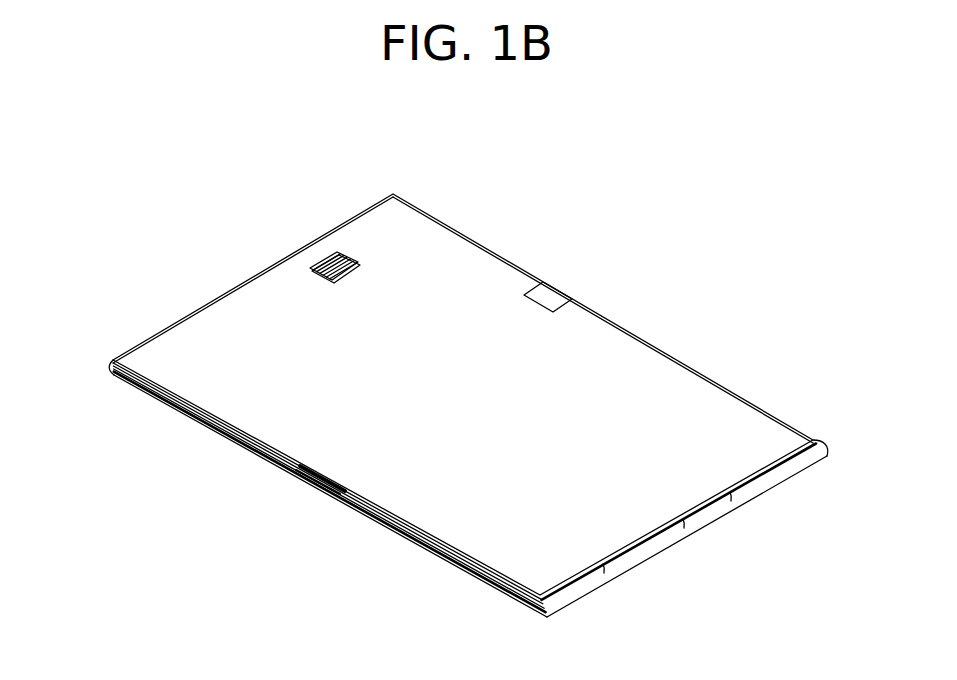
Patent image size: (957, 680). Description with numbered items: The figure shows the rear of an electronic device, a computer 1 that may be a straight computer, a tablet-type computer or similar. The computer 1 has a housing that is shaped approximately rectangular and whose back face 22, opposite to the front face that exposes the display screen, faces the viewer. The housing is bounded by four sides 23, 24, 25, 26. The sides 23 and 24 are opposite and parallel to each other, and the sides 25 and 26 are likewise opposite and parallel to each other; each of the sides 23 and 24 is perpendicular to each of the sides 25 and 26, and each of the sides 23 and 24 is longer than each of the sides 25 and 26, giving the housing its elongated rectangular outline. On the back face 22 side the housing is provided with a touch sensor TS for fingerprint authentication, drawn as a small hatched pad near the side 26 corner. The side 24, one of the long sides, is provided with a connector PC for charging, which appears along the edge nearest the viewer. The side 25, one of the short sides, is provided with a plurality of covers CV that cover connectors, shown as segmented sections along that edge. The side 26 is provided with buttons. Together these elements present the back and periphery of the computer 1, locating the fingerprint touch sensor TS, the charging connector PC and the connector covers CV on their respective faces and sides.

The computer 1 is at (548, 163).
The back face 22 is at (637, 378).
The side 23 is at (607, 318).
The side 24 is at (453, 567).
The side 25 is at (777, 485).
The side 26 is at (243, 282).
The touch sensor TS is at (327, 253).
The connector PC is at (323, 495).
The covers CV is at (708, 518).